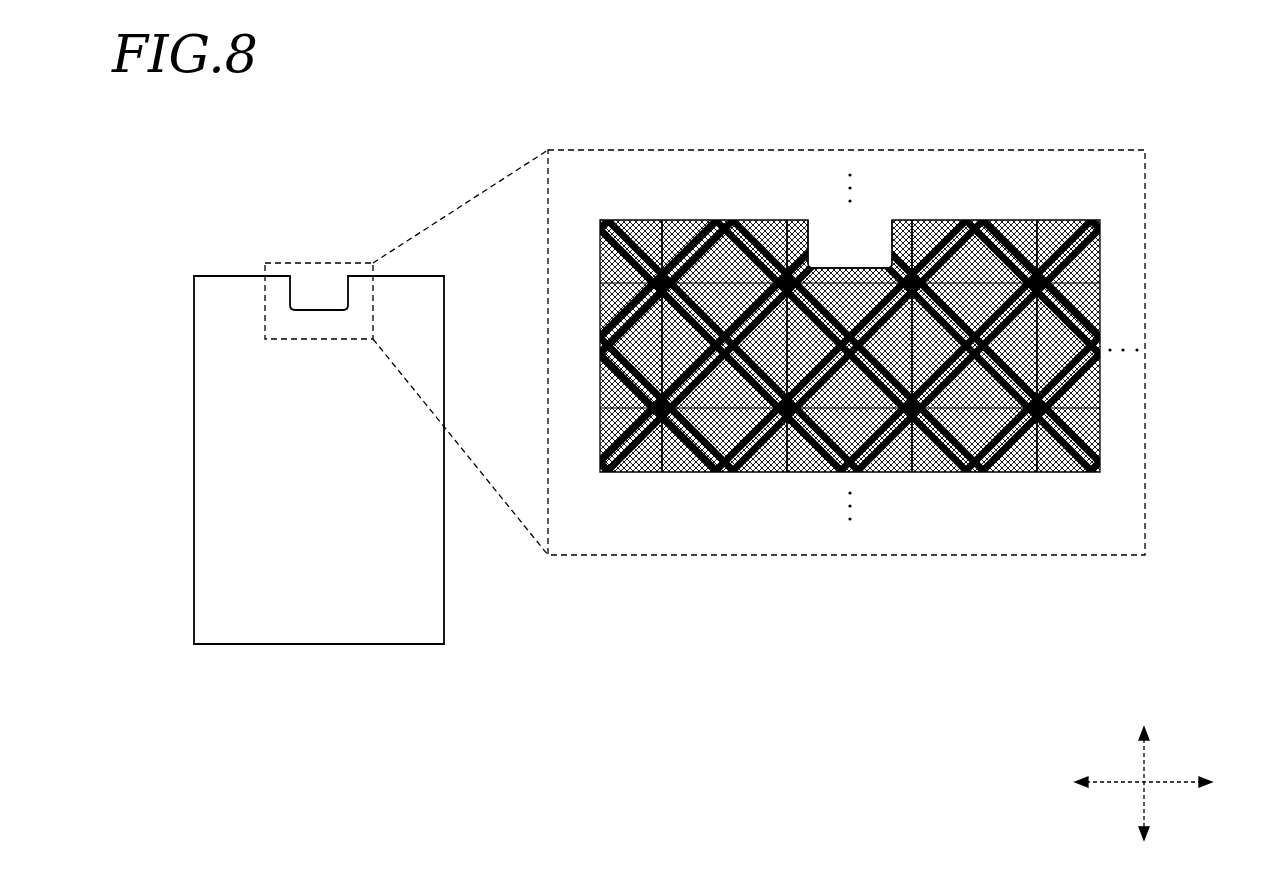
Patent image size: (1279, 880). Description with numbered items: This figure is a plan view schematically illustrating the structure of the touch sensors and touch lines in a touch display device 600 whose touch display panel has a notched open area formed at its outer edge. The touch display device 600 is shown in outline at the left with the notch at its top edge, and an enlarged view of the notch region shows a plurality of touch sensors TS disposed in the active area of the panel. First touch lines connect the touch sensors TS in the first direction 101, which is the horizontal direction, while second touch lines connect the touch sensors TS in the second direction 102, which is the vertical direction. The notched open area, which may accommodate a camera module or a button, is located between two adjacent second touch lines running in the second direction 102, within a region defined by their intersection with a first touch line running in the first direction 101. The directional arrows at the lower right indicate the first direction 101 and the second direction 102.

The touch display device 600 is at (203, 175).
The touch sensor TS is at (746, 350).
The first direction 101 is at (1178, 782).
The second direction 102 is at (1142, 760).